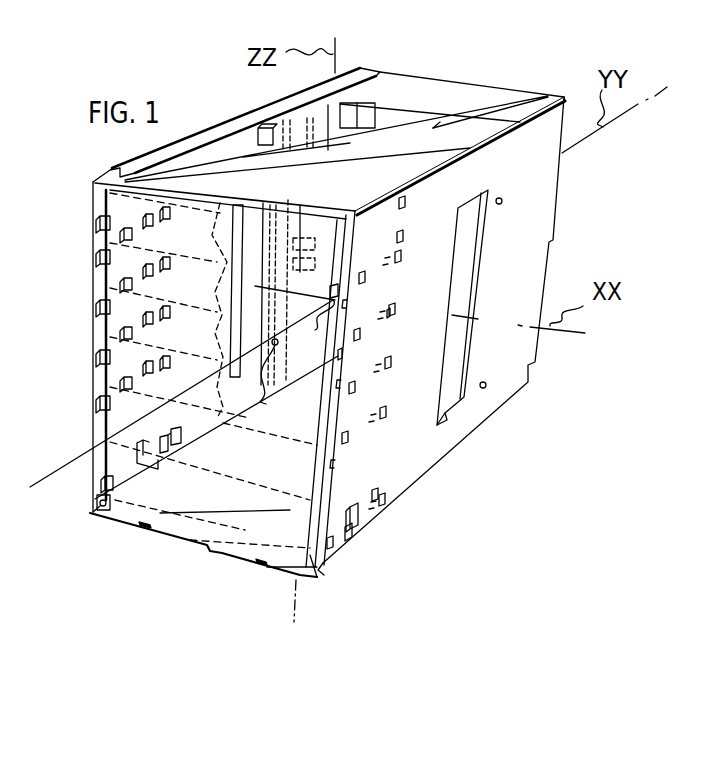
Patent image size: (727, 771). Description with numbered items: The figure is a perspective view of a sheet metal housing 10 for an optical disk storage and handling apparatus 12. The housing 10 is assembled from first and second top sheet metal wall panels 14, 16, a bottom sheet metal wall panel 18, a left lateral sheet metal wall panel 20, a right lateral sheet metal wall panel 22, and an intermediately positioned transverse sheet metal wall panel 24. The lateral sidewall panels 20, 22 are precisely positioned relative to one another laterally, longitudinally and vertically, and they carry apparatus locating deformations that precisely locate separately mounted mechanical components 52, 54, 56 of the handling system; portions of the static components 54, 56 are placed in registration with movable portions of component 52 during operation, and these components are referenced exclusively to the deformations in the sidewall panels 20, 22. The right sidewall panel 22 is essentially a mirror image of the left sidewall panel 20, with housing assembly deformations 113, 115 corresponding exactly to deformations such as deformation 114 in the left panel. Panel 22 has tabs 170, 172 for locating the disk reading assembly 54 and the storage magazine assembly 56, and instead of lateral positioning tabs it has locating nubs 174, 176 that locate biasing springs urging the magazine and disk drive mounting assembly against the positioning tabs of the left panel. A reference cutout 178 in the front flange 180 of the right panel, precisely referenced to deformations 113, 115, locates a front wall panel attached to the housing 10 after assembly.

The sheet metal housing 10 is at (503, 59).
The optical disk storage and handling apparatus 12 is at (115, 208).
The first top sheet metal wall panel 14 is at (198, 168).
The second top sheet metal wall panel 16 is at (398, 84).
The bottom sheet metal wall panel 18 is at (192, 528).
The left lateral sheet metal wall panel 20 is at (118, 447).
The right lateral sheet metal wall panel 22 is at (415, 483).
The transverse sheet metal wall panel 24 is at (435, 126).
The mechanical component 52 is at (307, 240).
The disk reading assembly 54 is at (117, 508).
The storage magazine assembly 56 is at (120, 318).
The housing assembly deformation 113 is at (503, 200).
The housing assembly deformation 114 is at (320, 404).
The housing assembly deformation 115 is at (484, 389).
The tab 170 is at (348, 532).
The tab 172 is at (340, 355).
The locating nub 174 is at (378, 494).
The locating nub 176 is at (388, 312).
The reference cutout 178 is at (317, 319).
The front flange 180 is at (327, 572).